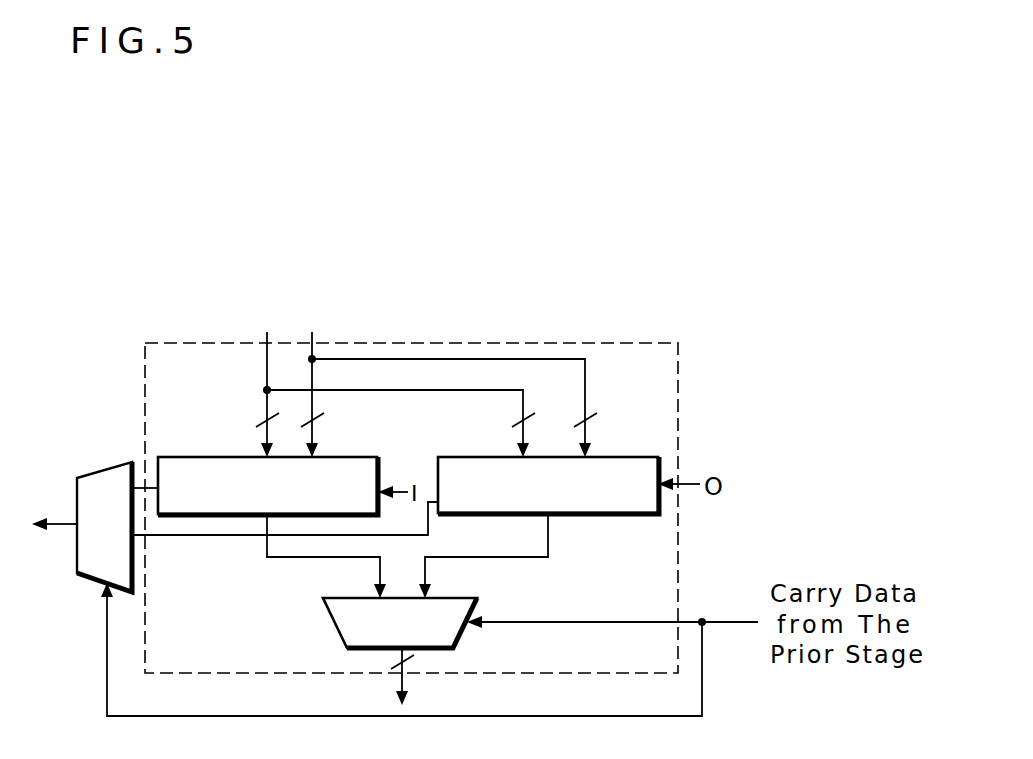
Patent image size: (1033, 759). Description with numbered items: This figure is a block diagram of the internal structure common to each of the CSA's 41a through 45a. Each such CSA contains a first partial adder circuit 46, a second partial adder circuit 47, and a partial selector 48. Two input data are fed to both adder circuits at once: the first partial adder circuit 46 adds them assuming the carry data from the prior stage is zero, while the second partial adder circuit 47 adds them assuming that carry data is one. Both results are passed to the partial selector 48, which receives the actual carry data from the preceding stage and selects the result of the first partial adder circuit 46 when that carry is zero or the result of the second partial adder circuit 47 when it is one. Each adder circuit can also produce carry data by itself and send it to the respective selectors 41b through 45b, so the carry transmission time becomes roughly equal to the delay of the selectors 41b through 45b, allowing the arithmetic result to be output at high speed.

The CSA 41a is at (577, 343).
The CSA 45a is at (411, 508).
The selector 41b is at (100, 466).
The selector 45b is at (104, 527).
The first partial adder circuit 46 is at (628, 457).
The second partial adder circuit 47 is at (355, 457).
The partial selector 48 is at (432, 596).